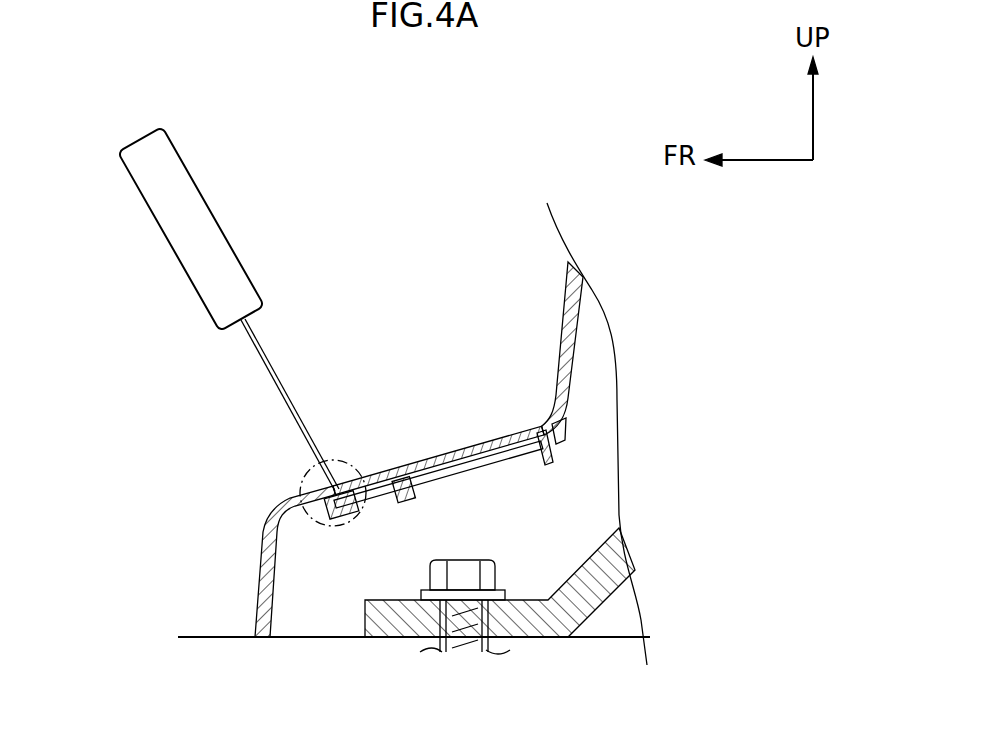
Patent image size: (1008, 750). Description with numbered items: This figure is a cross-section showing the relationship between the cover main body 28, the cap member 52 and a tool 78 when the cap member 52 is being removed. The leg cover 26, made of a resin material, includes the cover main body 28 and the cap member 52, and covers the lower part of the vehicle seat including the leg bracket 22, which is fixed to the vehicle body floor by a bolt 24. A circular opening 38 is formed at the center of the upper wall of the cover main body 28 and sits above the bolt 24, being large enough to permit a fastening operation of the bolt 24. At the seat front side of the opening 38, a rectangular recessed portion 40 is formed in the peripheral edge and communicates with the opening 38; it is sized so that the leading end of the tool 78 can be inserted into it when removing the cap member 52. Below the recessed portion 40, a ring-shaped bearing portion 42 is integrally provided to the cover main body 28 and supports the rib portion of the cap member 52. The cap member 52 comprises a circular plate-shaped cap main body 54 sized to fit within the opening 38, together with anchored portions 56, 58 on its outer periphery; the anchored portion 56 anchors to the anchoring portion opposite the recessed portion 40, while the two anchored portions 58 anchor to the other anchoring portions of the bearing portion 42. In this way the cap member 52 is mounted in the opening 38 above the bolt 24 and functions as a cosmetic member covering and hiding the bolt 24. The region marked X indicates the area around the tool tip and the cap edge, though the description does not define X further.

The leg bracket 22 is at (525, 633).
The bolt 24 is at (488, 560).
The leg cover 26 is at (530, 178).
The cover main body 28 is at (638, 262).
The opening 38 is at (521, 428).
The recessed portion 40 is at (330, 487).
The bearing portion 42 is at (358, 520).
The cap member 52 is at (442, 440).
The cap main body 54 is at (395, 480).
The anchored portion 56 is at (557, 448).
The anchored portion 58 is at (415, 490).
The tool 78 is at (208, 238).
The region X is at (346, 442).